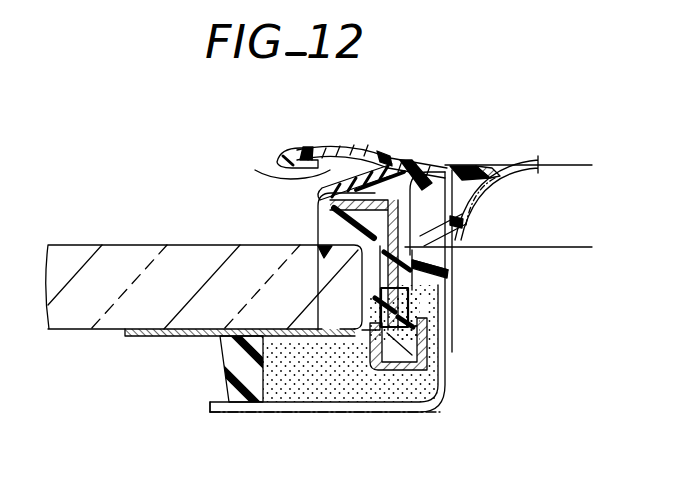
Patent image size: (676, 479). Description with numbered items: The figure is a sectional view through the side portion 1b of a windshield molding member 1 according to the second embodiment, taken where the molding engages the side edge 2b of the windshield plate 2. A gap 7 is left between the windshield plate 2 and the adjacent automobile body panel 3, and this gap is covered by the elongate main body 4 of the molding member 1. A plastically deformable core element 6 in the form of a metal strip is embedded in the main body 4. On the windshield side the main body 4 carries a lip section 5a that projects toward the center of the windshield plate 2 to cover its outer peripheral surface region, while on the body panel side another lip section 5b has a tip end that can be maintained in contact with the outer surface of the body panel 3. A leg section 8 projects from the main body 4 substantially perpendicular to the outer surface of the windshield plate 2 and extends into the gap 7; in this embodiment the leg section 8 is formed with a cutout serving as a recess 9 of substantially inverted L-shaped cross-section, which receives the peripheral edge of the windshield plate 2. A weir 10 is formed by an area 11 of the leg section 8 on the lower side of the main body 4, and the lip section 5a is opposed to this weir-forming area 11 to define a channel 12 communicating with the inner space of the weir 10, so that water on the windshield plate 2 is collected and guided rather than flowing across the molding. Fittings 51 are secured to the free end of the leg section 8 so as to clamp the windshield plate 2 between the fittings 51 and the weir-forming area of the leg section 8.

The molding member 1 is at (362, 148).
The side portion 1b is at (432, 168).
The windshield plate 2 is at (73, 244).
The side edge 2b is at (142, 244).
The body panel 3 is at (517, 160).
The main body 4 is at (392, 154).
The lip section 5a is at (295, 148).
The lip section 5b is at (478, 166).
The core element 6 is at (333, 150).
The gap 7 is at (428, 258).
The leg section 8 is at (437, 354).
The recess 9 is at (437, 312).
The weir 10 is at (315, 204).
The weir-forming area 11 is at (316, 227).
The channel 12 is at (275, 165).
The fittings 51 is at (373, 402).